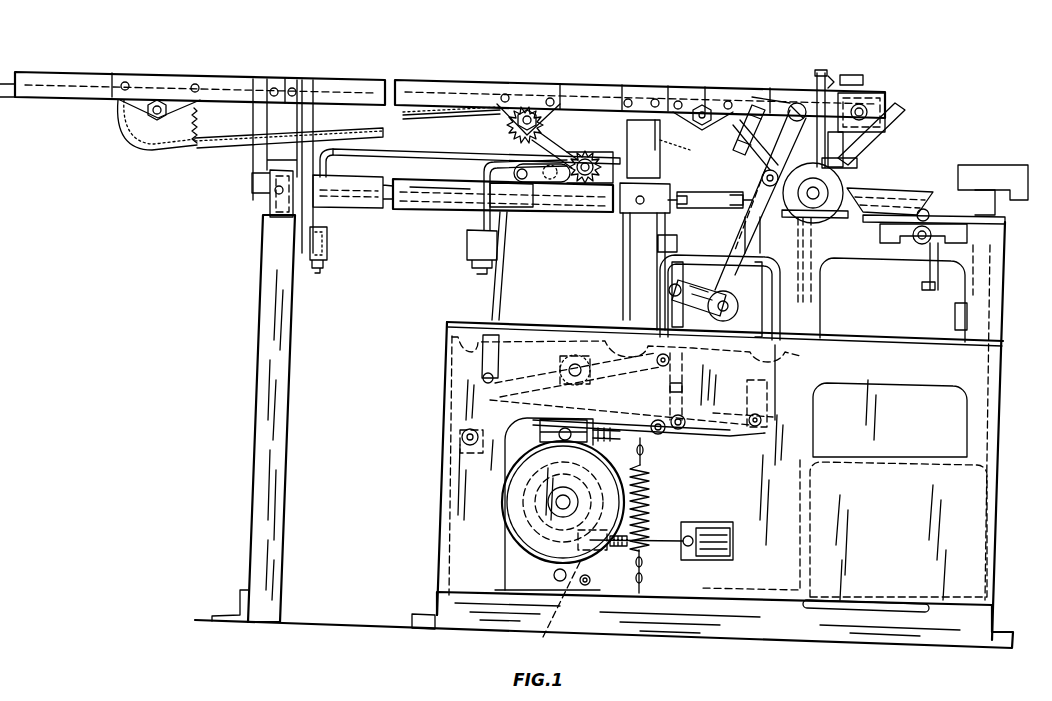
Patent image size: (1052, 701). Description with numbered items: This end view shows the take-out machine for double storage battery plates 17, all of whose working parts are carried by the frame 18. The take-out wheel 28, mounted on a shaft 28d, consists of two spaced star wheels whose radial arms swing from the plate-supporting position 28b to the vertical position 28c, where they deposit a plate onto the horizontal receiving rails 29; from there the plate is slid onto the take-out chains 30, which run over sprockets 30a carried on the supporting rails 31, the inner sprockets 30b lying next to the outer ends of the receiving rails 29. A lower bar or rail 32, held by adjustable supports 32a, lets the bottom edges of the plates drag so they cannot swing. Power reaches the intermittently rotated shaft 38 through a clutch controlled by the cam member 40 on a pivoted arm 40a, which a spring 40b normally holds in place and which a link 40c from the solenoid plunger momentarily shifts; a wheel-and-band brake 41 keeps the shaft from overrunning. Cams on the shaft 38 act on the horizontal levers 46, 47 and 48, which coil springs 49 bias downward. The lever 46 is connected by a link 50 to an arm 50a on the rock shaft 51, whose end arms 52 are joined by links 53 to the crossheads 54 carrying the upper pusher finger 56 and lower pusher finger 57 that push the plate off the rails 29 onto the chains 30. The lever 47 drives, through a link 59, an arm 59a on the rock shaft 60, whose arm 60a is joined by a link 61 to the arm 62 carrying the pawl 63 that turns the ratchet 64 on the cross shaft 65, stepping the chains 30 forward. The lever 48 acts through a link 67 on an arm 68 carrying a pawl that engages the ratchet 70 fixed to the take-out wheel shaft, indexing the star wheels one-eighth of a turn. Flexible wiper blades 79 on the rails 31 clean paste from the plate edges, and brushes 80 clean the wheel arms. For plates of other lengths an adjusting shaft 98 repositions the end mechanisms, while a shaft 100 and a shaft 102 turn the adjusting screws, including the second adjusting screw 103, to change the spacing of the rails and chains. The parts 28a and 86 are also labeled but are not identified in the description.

The double storage battery plates 17 is at (822, 70).
The frame 18 is at (445, 385).
The take-out wheel 28 is at (758, 130).
The trough 28a is at (925, 190).
The star wheel arm position 28b is at (897, 116).
The vertical position 28c is at (830, 76).
The shaft 28d is at (815, 212).
The receiving rails 29 is at (752, 97).
The take-out chains 30 is at (190, 152).
The sprockets 30a is at (148, 150).
The inner sprockets 30b is at (658, 149).
The supporting rails 31 is at (380, 102).
The lower bar or rail 32 is at (434, 156).
The adjustable supports 32a is at (345, 212).
The intermittently rotated shaft 38 is at (563, 494).
The cam member 40 is at (589, 502).
The pivoted arm 40a is at (543, 610).
The spring 40b is at (716, 522).
The link 40c is at (662, 538).
The brake 41 is at (508, 491).
The lever 46 is at (680, 431).
The lever 47 is at (645, 450).
The lever 48 is at (748, 382).
The coil springs 49 is at (650, 493).
The link 50 is at (695, 338).
The arm 50a is at (706, 278).
The rock shaft 51 is at (726, 322).
The arms 52 is at (790, 136).
The links 53 is at (810, 98).
The crossheads 54 is at (875, 97).
The upper pivoted pusher finger 56 is at (855, 73).
The lower pivoted pusher finger 57 is at (846, 185).
The link 59 is at (660, 397).
The arm 59a is at (660, 394).
The rock shaft 60 is at (582, 382).
The arm 60a is at (528, 381).
The link 61 is at (510, 271).
The arm 62 is at (540, 213).
The pawl 63 is at (585, 214).
The ratchet 64 is at (572, 150).
The cross shaft 65 is at (596, 156).
The link 67 is at (766, 373).
The arm 68 is at (760, 180).
The ratchet 70 is at (842, 195).
The flexible stationary wiper blades 79 is at (705, 192).
The wipers or brushes 80 is at (735, 225).
The bracket 86 is at (958, 192).
The adjusting shaft 98 is at (922, 245).
The shaft 100 is at (637, 226).
The shaft 102 is at (445, 214).
The second adjusting screw 103 is at (262, 203).